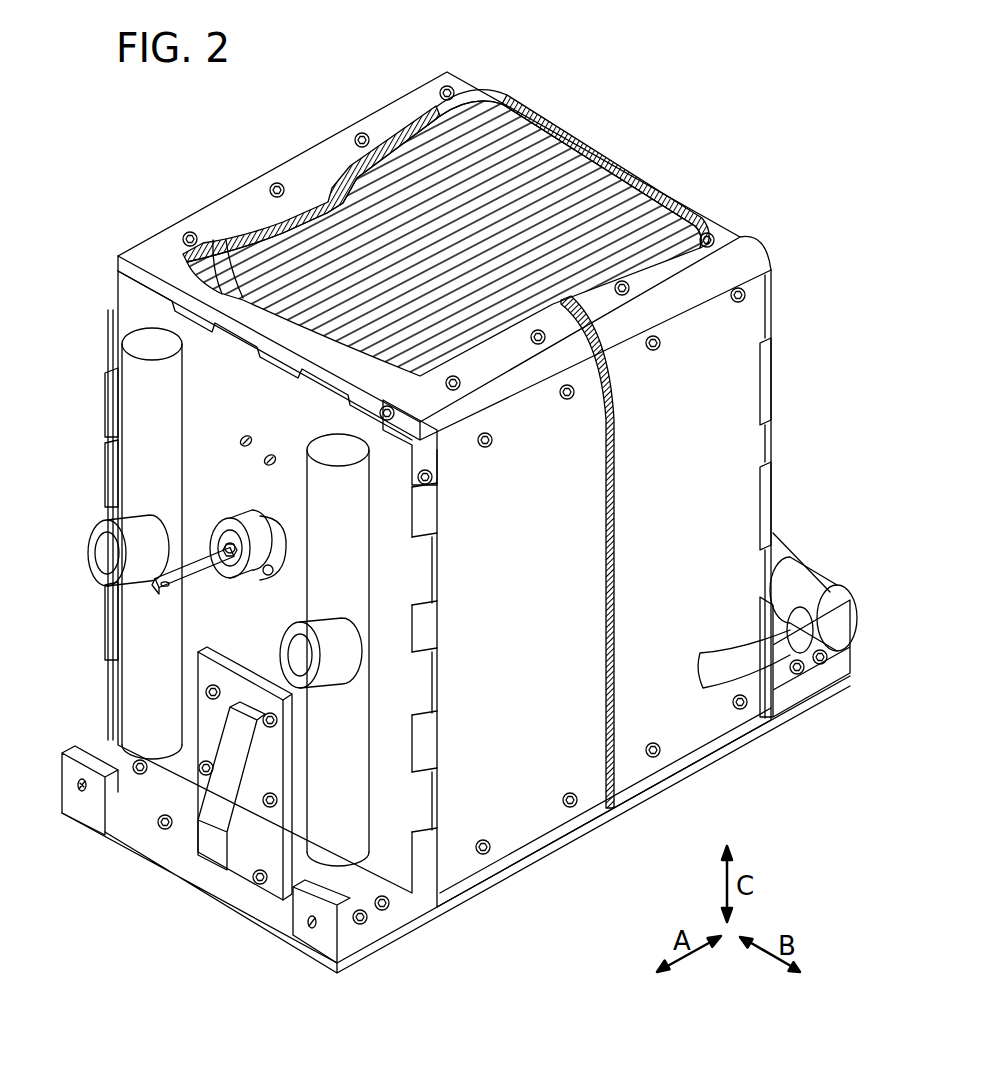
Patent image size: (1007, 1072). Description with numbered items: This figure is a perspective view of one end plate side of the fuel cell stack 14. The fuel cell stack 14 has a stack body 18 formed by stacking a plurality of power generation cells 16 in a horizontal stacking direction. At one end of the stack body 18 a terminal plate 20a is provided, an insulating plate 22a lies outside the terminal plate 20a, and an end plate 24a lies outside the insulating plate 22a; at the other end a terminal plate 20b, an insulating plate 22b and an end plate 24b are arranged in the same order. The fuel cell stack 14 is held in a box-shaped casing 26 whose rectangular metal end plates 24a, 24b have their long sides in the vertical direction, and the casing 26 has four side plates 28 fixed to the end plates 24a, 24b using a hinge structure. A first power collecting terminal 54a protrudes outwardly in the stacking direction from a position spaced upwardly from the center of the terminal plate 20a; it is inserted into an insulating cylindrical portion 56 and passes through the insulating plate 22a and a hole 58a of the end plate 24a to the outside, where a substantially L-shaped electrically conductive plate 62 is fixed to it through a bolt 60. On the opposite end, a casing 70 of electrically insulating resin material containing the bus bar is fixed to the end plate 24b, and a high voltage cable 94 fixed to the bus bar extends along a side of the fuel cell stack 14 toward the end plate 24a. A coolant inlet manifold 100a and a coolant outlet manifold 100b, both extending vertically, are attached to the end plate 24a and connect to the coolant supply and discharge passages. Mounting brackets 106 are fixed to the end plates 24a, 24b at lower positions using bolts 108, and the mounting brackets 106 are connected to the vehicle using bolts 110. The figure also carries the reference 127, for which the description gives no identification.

The fuel cell stack 14 is at (104, 172).
The power generation cell 16 is at (580, 200).
The stack body 18 is at (690, 100).
The terminal plate 20a is at (220, 267).
The terminal plate 20b is at (495, 97).
The insulating plate 22a is at (186, 236).
The insulating plate 22b is at (517, 113).
The end plate 24a is at (135, 322).
The end plate 24b is at (776, 268).
The casing 26 is at (728, 463).
The side plate 28 is at (390, 128).
The first power collecting terminal 54a is at (210, 528).
The insulating cylindrical portion 56 is at (243, 520).
The hole 58a is at (283, 545).
The bolt 60 is at (238, 562).
The electrically conductive plate 62 is at (203, 563).
The casing 70 is at (797, 553).
The high voltage cable 94 is at (723, 657).
The coolant inlet manifold 100a is at (135, 474).
The coolant outlet manifold 100b is at (350, 578).
The mounting bracket 106 is at (370, 937).
The bolt 108 is at (262, 565).
The bolt 110 is at (400, 917).
The mounting holes 127 is at (240, 438).